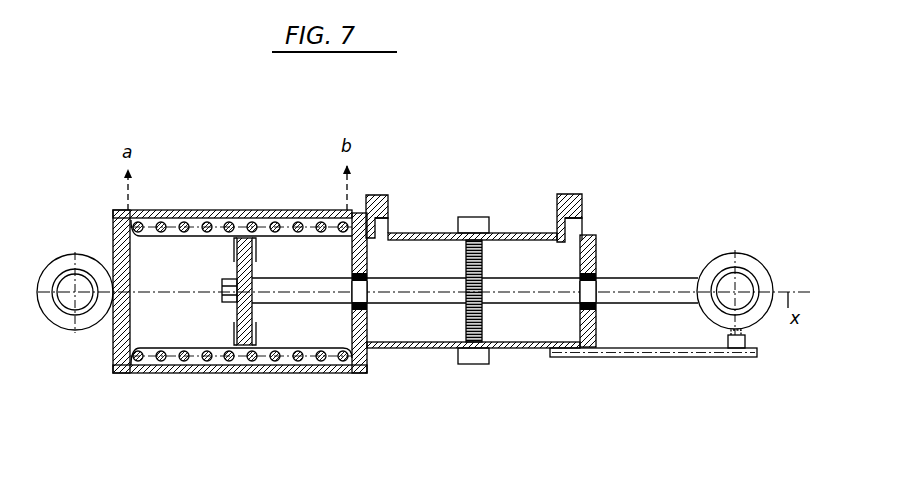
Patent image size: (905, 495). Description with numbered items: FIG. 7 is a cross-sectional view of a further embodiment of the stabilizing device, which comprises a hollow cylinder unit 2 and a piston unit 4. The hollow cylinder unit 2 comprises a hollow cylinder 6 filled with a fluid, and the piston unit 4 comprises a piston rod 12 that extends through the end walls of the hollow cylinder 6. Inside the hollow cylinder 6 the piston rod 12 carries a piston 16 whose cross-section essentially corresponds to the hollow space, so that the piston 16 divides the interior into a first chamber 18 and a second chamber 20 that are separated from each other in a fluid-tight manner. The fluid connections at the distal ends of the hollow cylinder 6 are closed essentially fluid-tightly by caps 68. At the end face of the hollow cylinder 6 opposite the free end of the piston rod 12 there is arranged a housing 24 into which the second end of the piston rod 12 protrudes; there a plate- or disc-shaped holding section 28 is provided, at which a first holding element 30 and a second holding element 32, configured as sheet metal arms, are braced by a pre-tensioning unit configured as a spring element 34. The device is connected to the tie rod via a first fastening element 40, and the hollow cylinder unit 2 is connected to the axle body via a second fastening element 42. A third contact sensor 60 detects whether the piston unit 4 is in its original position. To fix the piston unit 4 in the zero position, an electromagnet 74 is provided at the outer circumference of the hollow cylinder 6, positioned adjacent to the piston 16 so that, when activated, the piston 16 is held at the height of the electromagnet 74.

The hollow cylinder unit 2 is at (331, 388).
The piston unit 4 is at (644, 260).
The hollow cylinder 6 is at (540, 348).
The piston rod 12 is at (387, 297).
The piston 16 is at (482, 334).
The first chamber 18 is at (416, 271).
The second chamber 20 is at (543, 271).
The housing 24 is at (249, 373).
The holding section 28 is at (237, 311).
The first holding element 30 is at (292, 237).
The second holding element 32 is at (173, 237).
The spring element 34 is at (172, 363).
The first fastening element 40 is at (752, 268).
The second fastening element 42 is at (62, 266).
The third contact sensor 60 is at (739, 357).
The caps 68 is at (376, 195).
The electromagnet 74 is at (473, 217).